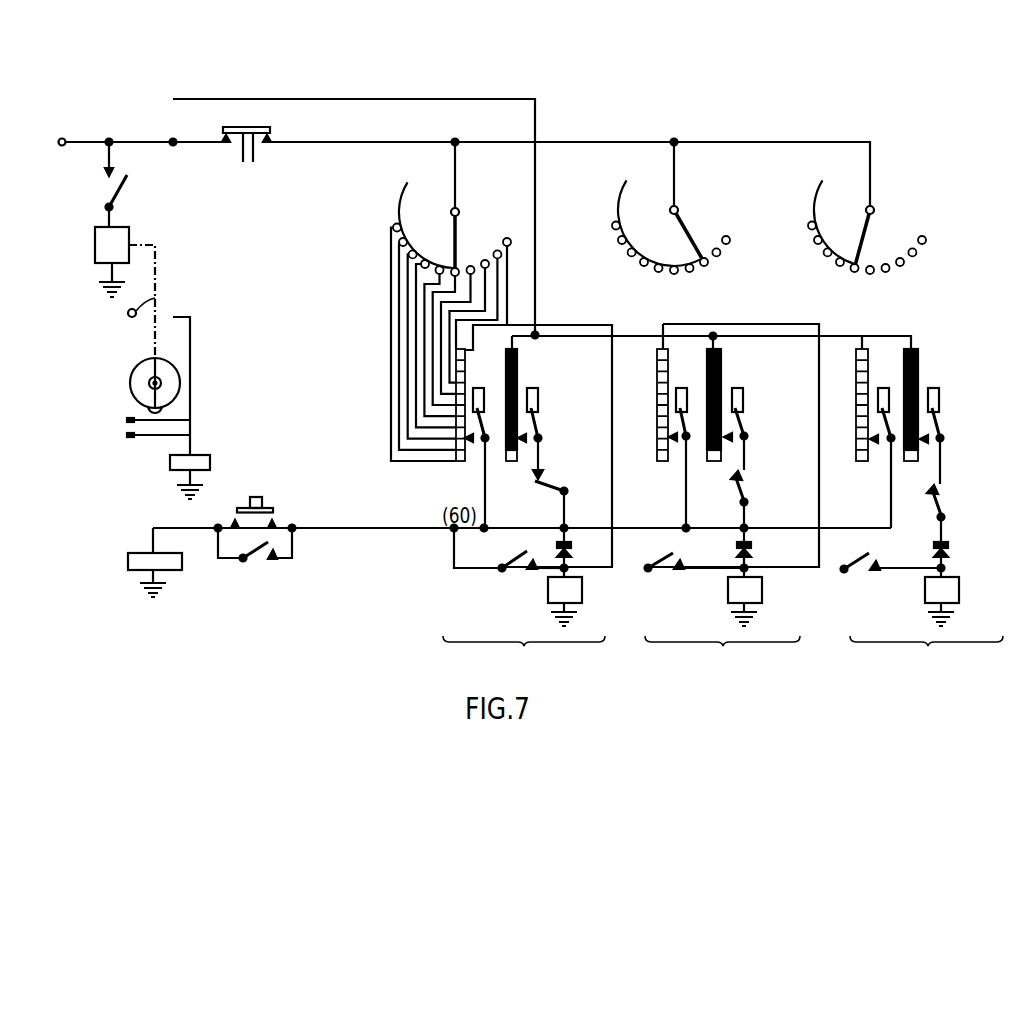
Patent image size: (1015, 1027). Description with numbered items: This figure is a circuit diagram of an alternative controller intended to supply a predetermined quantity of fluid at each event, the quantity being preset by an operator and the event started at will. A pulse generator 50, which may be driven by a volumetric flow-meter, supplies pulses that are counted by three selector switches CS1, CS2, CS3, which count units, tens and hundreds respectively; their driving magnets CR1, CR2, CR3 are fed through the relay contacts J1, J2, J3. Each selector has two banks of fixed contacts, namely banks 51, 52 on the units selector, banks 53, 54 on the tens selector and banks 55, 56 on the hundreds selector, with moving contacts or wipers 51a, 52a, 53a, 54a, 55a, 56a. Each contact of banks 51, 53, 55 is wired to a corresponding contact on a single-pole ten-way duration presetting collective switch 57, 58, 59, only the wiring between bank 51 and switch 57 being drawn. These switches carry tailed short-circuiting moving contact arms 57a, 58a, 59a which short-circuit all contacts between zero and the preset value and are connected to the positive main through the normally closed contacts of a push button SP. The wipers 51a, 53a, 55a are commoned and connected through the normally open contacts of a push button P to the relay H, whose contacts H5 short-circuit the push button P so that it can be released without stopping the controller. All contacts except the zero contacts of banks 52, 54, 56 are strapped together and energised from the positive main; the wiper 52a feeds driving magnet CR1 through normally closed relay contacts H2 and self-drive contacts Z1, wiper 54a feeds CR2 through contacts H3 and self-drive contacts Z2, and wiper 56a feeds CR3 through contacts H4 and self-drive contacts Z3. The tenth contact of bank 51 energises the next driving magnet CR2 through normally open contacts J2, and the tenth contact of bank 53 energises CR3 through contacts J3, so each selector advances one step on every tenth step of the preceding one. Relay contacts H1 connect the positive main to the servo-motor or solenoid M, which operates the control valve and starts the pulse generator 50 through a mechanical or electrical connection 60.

The push button SP is at (252, 154).
The relay contacts H1 is at (107, 184).
The servo-motor or solenoid M is at (101, 262).
The connection 60 is at (145, 329).
The pulse generator 50 is at (126, 428).
The push button P is at (255, 506).
The relay contacts H5 is at (255, 557).
The duration presetting collective switch 57 is at (451, 301).
The moving contact arm 57a is at (457, 238).
The duration presetting collective switch 58 is at (671, 208).
The moving contact arm 58a is at (687, 227).
The duration presetting collective switch 59 is at (867, 227).
The moving contact arm 59a is at (864, 231).
The bank of fixed contacts 51 is at (456, 419).
The moving contact 51a is at (479, 388).
The bank of fixed contacts 52 is at (511, 411).
The moving contact 52a is at (533, 388).
The bank of fixed contacts 53 is at (664, 418).
The moving contact 53a is at (682, 388).
The bank of fixed contacts 54 is at (714, 418).
The moving contact 54a is at (738, 388).
The bank of fixed contacts 55 is at (862, 418).
The moving contact 55a is at (884, 388).
The bank of fixed contacts 56 is at (913, 418).
The moving contact 56a is at (934, 388).
The relay contacts H2 is at (555, 503).
The relay contacts H3 is at (752, 507).
The relay contacts H4 is at (949, 514).
The relay contacts J1 is at (525, 555).
The relay contacts J2 is at (692, 555).
The relay contacts J3 is at (889, 556).
The self-drive contacts Z1 is at (574, 558).
The self-drive contacts Z2 is at (757, 559).
The self-drive contacts Z3 is at (955, 559).
The driving magnet CR1 is at (582, 601).
The driving magnet CR2 is at (764, 601).
The driving magnet CR3 is at (960, 601).
The selector switch CS1 is at (524, 654).
The selector switch CS2 is at (722, 655).
The selector switch CS3 is at (926, 655).